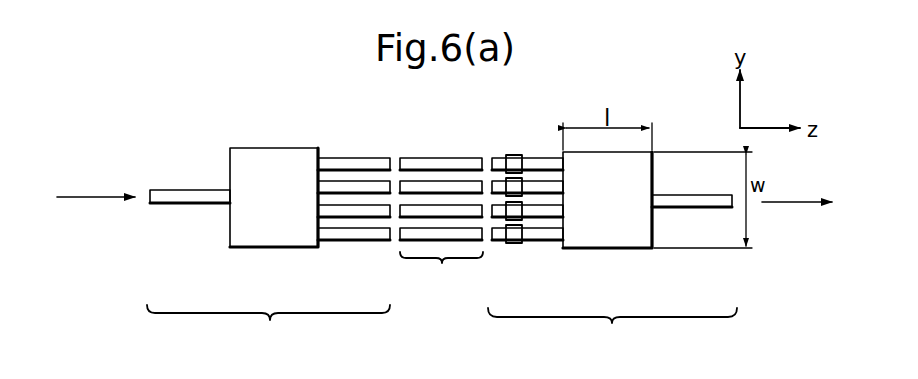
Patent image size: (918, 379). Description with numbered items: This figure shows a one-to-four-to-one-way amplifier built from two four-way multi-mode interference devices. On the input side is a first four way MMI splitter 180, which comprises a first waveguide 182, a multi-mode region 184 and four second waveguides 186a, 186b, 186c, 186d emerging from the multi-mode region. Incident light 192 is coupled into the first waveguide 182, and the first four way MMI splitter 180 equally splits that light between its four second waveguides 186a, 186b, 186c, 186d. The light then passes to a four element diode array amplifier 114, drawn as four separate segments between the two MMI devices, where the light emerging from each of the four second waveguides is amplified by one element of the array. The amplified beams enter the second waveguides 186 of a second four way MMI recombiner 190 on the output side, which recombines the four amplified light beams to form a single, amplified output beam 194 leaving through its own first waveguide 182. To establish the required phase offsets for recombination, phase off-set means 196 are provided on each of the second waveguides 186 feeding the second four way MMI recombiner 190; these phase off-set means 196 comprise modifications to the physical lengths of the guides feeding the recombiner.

The first four way MMI splitter 180 is at (272, 222).
The second four way MMI recombiner 190 is at (612, 233).
The first waveguide 182 is at (182, 195).
The multi-mode region 184 is at (267, 155).
The second waveguides 186 is at (540, 233).
The second waveguide 186a is at (370, 162).
The second waveguide 186b is at (335, 185).
The second waveguide 186c is at (333, 210).
The second waveguide 186d is at (373, 232).
The phase off-set means 196 is at (510, 162).
The four element diode array amplifier 114 is at (441, 227).
The incident light 192 is at (90, 195).
The output beam 194 is at (795, 204).